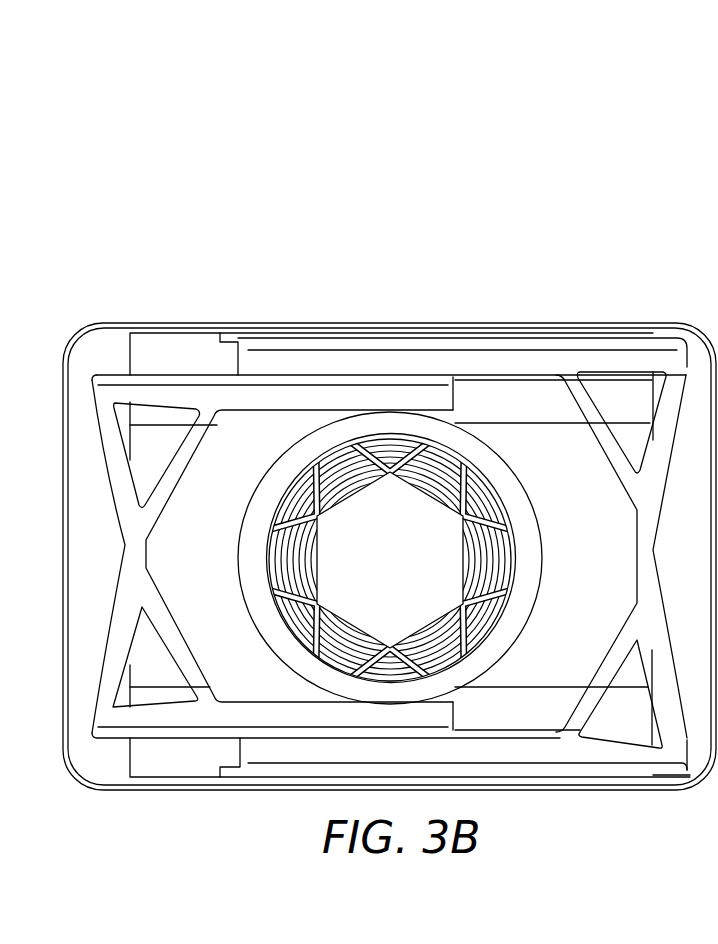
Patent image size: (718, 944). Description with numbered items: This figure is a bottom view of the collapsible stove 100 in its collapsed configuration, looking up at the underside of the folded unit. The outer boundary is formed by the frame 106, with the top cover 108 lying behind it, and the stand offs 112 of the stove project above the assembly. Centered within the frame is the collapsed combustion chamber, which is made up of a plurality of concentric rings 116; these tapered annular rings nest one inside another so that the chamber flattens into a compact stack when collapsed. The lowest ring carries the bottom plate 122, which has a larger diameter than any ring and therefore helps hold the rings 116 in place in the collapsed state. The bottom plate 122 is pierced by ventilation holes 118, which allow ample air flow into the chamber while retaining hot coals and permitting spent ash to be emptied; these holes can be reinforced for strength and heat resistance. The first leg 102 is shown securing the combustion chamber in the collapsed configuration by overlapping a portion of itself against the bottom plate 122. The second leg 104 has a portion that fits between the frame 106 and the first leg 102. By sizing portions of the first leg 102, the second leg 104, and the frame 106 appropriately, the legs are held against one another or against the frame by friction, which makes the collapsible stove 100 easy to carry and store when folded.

The collapsible stove 100 is at (148, 193).
The first leg 102 is at (150, 525).
The second leg 104 is at (616, 556).
The frame 106 is at (127, 330).
The top cover 108 is at (240, 328).
The stand offs 112 is at (250, 108).
The concentric rings 116 is at (342, 616).
The ventilation holes 118 is at (502, 607).
The bottom plate 122 is at (489, 447).